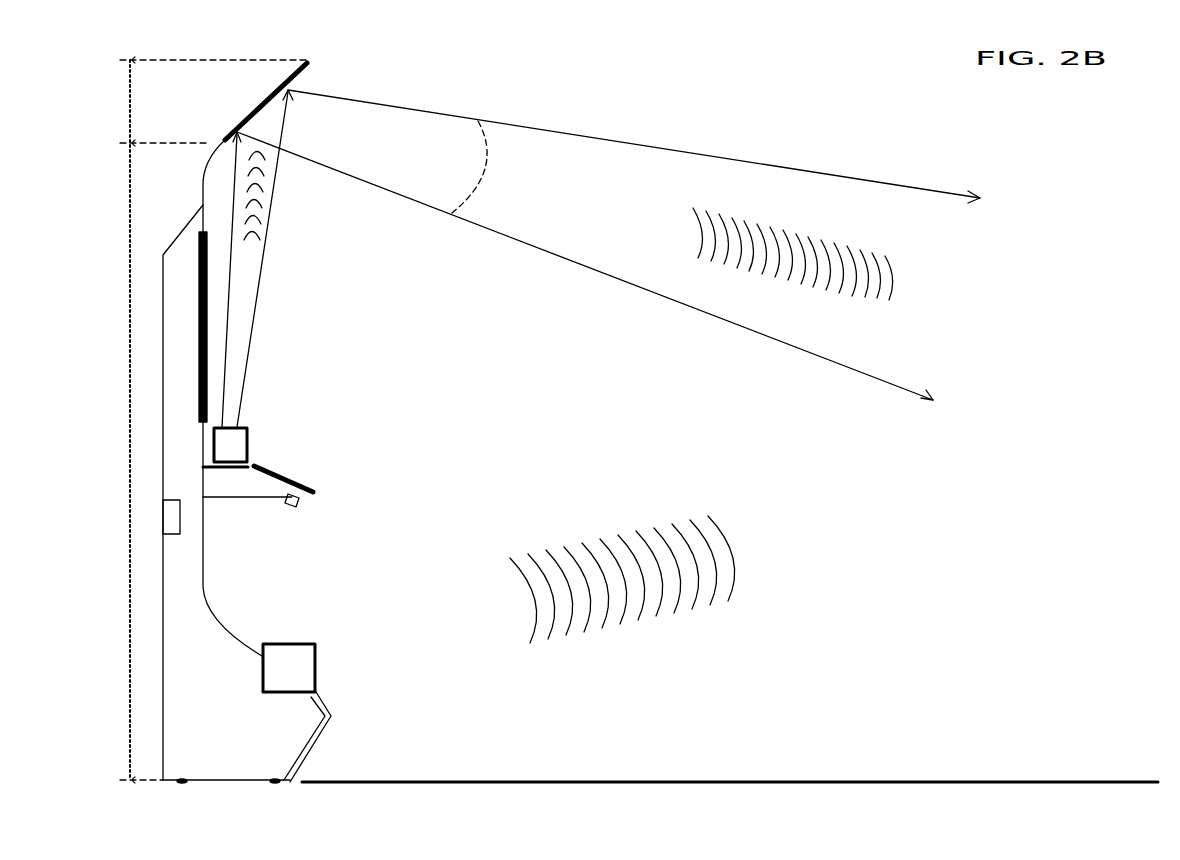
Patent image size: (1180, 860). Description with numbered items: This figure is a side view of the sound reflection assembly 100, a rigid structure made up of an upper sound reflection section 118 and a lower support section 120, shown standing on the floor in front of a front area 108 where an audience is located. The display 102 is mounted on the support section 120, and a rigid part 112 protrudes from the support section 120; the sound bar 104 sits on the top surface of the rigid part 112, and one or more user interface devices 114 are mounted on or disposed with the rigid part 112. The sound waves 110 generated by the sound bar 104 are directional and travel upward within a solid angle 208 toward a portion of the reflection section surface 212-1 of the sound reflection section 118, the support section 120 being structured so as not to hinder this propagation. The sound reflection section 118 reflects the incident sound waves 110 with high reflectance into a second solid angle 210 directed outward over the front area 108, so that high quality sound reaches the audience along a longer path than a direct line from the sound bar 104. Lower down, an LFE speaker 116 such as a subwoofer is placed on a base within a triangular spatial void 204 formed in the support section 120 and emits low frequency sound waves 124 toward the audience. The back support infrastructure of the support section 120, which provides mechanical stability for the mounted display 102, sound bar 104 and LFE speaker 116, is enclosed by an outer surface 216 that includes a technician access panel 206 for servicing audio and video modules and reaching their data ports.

The sound reflection assembly 100 is at (236, 396).
The display 102 is at (198, 338).
The sound bar 104 is at (247, 447).
The front area 108 is at (1017, 781).
The sound waves 110 is at (257, 190).
The rigid part 112 is at (297, 500).
The user interface devices 114 is at (305, 482).
The LFE speaker 116 is at (292, 662).
The sound reflection section 118 is at (136, 98).
The support section 120 is at (136, 444).
The low frequency sound waves 124 is at (640, 543).
The triangular spatial void 204 is at (317, 692).
The technician access panel 206 is at (172, 522).
The solid angle 208 is at (233, 265).
The second solid angle 210 is at (493, 150).
The reflection section surface 212-1 is at (307, 65).
The outer surface 216 is at (173, 647).